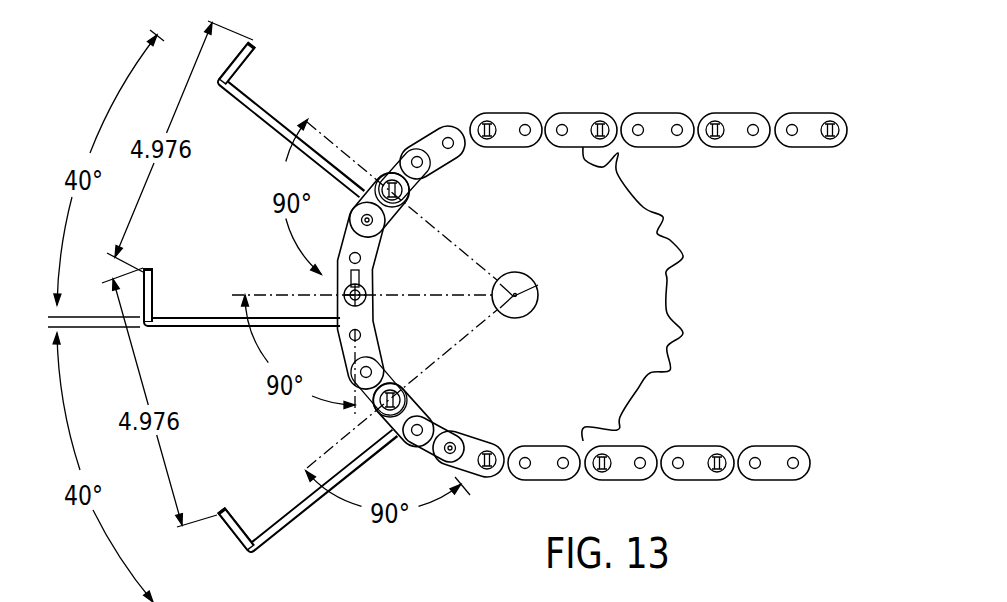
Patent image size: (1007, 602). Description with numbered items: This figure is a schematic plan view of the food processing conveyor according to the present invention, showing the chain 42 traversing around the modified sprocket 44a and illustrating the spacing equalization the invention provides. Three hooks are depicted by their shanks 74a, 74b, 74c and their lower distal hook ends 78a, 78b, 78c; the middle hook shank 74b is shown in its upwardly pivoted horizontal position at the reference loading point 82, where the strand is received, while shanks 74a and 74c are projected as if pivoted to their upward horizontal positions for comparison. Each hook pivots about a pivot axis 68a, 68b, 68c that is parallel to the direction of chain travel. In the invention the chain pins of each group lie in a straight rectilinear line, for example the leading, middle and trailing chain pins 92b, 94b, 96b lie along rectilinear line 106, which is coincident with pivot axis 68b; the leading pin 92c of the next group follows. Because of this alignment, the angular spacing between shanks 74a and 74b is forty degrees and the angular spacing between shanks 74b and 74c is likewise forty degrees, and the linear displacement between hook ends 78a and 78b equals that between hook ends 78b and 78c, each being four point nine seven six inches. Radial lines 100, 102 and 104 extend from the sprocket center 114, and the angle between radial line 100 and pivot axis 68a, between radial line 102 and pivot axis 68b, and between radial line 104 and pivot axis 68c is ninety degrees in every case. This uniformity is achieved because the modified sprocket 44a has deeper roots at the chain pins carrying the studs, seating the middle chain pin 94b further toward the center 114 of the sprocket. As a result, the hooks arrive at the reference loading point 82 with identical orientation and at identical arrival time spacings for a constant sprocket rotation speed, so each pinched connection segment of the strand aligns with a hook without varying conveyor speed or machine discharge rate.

The chain 42 is at (694, 112).
The modified sprocket 44a is at (648, 297).
The pivot axis 68a is at (452, 478).
The pivot axis 68b is at (361, 276).
The pivot axis 68c is at (329, 268).
The hook shank 74a is at (285, 524).
The hook shank 74b is at (199, 329).
The hook shank 74c is at (253, 103).
The hook end 78a is at (220, 508).
The hook end 78b is at (153, 269).
The hook end 78c is at (254, 38).
The reference loading point 82 is at (282, 295).
The leading chain pin 92b is at (362, 335).
The leading chain pin 92c is at (405, 212).
The middle chain pin 94b is at (366, 304).
The trailing chain pin 96b is at (361, 253).
The radial line 100 is at (461, 343).
The radial line 102 is at (481, 294).
The radial line 104 is at (348, 153).
The rectilinear line 106 is at (360, 357).
The sprocket center 114 is at (538, 285).